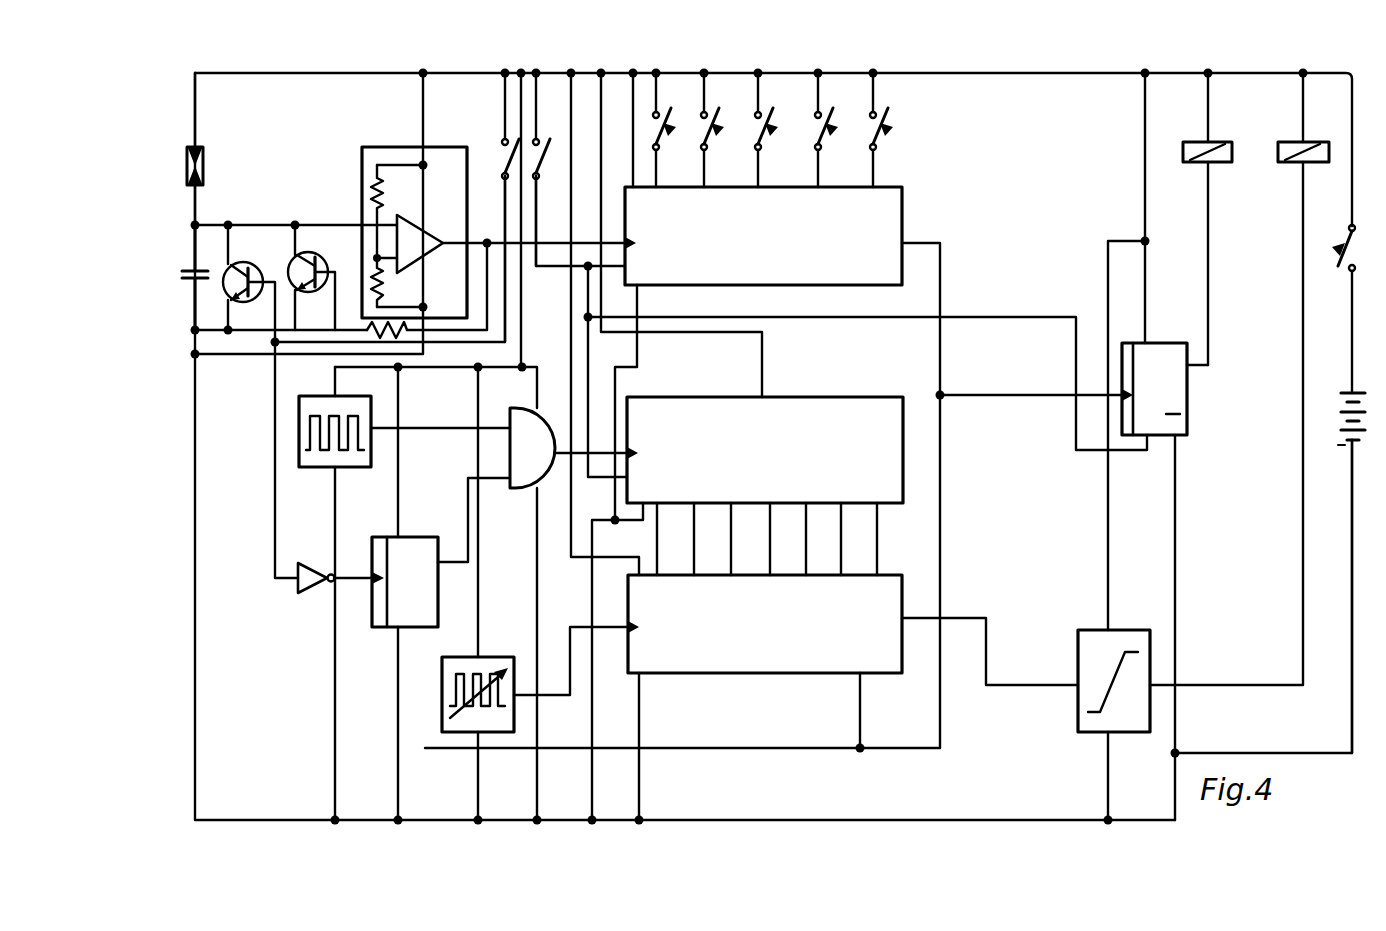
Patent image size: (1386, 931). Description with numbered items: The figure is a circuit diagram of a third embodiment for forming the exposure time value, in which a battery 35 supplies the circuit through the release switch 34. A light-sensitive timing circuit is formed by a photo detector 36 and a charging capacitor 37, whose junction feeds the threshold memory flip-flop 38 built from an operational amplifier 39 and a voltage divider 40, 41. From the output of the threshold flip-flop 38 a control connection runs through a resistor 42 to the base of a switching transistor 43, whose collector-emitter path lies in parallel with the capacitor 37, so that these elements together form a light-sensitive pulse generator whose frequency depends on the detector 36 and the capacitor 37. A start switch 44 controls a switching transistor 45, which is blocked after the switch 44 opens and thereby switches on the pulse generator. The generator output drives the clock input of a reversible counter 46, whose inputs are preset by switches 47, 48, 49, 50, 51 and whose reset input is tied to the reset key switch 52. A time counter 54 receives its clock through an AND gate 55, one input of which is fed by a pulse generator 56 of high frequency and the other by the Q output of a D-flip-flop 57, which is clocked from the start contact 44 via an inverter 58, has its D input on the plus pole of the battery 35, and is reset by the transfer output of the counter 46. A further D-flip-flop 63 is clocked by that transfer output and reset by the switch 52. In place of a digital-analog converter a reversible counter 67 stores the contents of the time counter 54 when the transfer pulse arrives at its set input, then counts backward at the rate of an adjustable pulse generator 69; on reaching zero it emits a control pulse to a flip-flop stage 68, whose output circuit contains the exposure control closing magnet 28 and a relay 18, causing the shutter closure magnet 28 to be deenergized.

The photo detector 36 is at (203, 160).
The charging capacitor 37 is at (202, 268).
The threshold memory flip flop 38 is at (413, 201).
The operational amplifier 39 is at (429, 234).
The voltage divider resistor 40 is at (399, 212).
The voltage divider resistor 41 is at (399, 285).
The resistor 42 is at (402, 327).
The switching transistor 43 is at (304, 252).
The start switch 44 is at (490, 175).
The switching transistor 45 is at (240, 262).
The reversible counter 46 is at (898, 260).
The switch 47 is at (661, 110).
The switch 48 is at (709, 110).
The switch 49 is at (763, 110).
The switch 50 is at (823, 110).
The switch 51 is at (878, 110).
The reset key switch 52 is at (541, 140).
The time counter 54 is at (821, 405).
The AND gate 55 is at (517, 492).
The pulse generator 56 is at (318, 397).
The D-flip-flop 57 is at (422, 542).
The inverter 58 is at (309, 566).
The D-flip-flop 63 is at (1128, 343).
The reversible counter 67 is at (729, 655).
The flip-flop stage 68 is at (1085, 652).
The pulse generator 69 is at (490, 658).
The relay 18 is at (1213, 142).
The exposure control closing magnet 28 is at (1306, 142).
The release switch 34 is at (1346, 275).
The battery 35 is at (1338, 447).